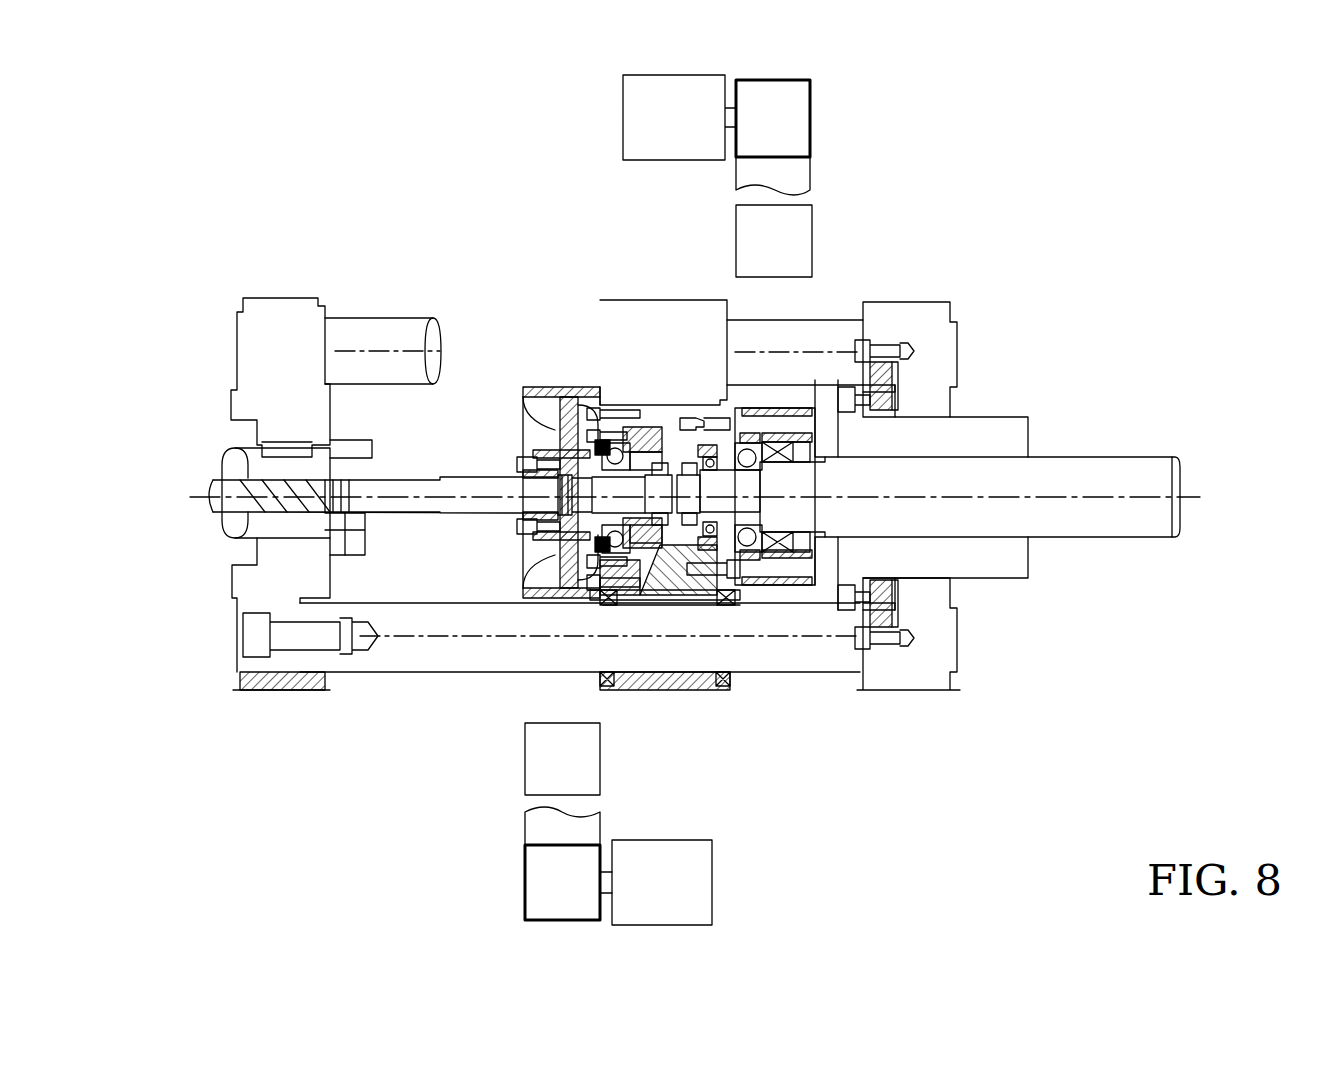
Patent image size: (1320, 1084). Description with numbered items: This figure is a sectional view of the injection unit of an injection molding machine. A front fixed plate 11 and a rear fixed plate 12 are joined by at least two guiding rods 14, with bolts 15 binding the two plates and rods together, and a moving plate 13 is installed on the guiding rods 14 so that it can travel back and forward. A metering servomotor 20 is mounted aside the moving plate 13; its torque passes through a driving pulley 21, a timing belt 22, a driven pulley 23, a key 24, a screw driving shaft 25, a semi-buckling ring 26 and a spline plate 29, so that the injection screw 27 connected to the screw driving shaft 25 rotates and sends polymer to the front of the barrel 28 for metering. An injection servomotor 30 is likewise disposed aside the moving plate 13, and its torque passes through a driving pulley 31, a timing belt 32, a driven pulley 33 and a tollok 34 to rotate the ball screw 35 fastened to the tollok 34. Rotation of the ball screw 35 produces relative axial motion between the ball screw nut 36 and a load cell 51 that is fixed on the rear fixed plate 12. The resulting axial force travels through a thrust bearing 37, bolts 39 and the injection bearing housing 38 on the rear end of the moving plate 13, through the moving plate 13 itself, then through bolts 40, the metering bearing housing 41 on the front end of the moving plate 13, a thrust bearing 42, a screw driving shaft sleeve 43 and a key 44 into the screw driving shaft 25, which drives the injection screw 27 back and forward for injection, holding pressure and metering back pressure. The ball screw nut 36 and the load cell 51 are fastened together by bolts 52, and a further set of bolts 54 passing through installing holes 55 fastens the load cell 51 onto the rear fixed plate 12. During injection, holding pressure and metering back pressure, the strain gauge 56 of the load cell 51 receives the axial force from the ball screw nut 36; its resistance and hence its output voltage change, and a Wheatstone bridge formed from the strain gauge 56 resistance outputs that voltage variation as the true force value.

The front fixed plate 11 is at (247, 346).
The rear fixed plate 12 is at (935, 340).
The moving plate 13 is at (648, 310).
The guiding rods 14 is at (375, 325).
The bolts 15 is at (258, 640).
The metering servomotor 20 is at (710, 882).
The driving pulley 21 is at (540, 882).
The timing belt 22 is at (540, 822).
The driven pulley 23 is at (540, 760).
The key 24 is at (533, 387).
The screw driving shaft 25 is at (545, 560).
The semi-buckling ring 26 is at (540, 448).
The injection screw 27 is at (232, 478).
The barrel 28 is at (232, 525).
The spline plate 29 is at (568, 605).
The injection servomotor 30 is at (623, 118).
The driving pulley 31 is at (805, 118).
The timing belt 32 is at (800, 175).
The driven pulley 33 is at (778, 408).
The tollok 34 is at (762, 450).
The ball screw 35 is at (1157, 475).
The ball screw nut 36 is at (1012, 433).
The thrust bearing 37 is at (752, 408).
The injection bearing housing 38 is at (730, 405).
The bolts 39 is at (700, 415).
The bolts 40 is at (600, 427).
The metering bearing housing 41 is at (640, 590).
The thrust bearing 42 is at (663, 600).
The screw driving shaft sleeve 43 is at (668, 692).
The key 44 is at (632, 408).
The load cell 51 is at (885, 360).
The bolts 52 is at (910, 350).
The bolts 54 is at (895, 410).
The installing holes 55 is at (900, 392).
The strain gauge 56 is at (895, 372).